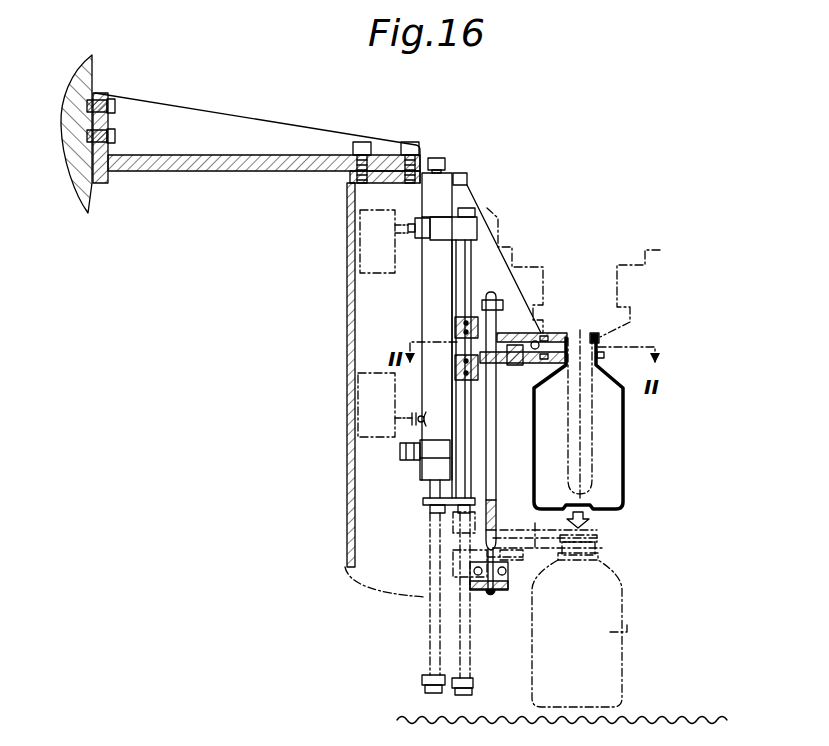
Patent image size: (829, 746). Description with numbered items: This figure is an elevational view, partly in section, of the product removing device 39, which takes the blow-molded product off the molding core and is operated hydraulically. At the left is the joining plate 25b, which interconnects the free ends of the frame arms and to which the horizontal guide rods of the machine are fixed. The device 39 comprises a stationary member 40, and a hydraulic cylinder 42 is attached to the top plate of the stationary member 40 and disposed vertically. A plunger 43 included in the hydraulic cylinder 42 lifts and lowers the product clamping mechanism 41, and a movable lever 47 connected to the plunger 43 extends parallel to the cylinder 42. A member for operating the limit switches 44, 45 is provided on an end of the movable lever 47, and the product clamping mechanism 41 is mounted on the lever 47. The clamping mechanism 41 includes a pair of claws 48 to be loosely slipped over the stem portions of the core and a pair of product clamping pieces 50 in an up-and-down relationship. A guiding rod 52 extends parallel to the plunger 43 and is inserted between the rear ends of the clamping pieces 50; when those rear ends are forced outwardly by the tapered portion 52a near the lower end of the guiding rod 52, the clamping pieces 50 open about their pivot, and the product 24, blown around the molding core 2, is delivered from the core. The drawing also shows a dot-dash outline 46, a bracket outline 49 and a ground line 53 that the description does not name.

The joining plate 25b is at (85, 190).
The stationary member 40 is at (347, 330).
The hydraulic cylinder 42 is at (432, 292).
The limit switch 44 is at (370, 230).
The limit switch 45 is at (361, 397).
The product removing device 39 is at (482, 196).
The movable lever 47 is at (468, 263).
The plate 46 is at (492, 220).
The plate 49 is at (552, 325).
The guiding rod 52 is at (498, 298).
The tapered portion 52a is at (486, 544).
The claw 48 is at (596, 336).
The product clamping mechanism 41 is at (606, 336).
The product clamping piece 50 is at (604, 356).
The product 24 is at (627, 458).
The molding core 2 is at (586, 426).
The plunger 43 is at (432, 492).
The floor 53 is at (680, 716).